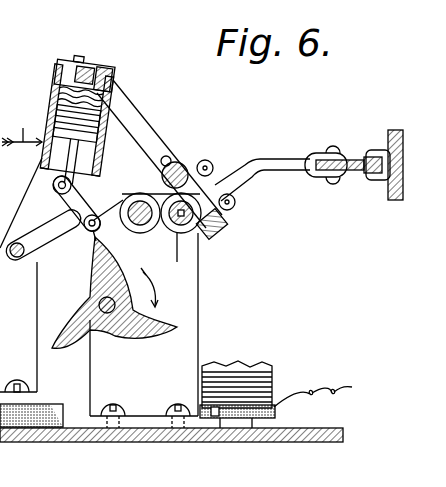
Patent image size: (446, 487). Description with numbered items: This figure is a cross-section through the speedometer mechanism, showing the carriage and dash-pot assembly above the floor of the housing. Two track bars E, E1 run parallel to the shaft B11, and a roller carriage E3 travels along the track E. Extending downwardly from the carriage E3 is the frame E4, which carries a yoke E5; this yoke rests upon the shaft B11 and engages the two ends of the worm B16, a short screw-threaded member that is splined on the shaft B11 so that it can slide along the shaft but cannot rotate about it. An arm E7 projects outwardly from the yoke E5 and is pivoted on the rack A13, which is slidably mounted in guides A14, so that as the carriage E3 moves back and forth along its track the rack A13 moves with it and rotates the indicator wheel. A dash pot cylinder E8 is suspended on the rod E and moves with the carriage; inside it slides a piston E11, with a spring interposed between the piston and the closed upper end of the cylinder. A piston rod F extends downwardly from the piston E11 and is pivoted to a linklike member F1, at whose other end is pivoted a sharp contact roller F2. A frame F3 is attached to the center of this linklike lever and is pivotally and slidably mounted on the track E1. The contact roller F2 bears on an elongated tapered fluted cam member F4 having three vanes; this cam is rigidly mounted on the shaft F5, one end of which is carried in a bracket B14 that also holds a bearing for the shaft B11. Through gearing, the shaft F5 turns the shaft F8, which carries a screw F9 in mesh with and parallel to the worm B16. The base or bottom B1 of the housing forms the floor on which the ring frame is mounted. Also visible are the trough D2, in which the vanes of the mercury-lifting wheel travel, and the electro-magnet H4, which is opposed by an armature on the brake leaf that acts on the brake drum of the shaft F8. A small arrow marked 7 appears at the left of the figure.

The direction arrow 7 is at (22, 127).
The track bar E is at (112, 84).
The track bar E1 is at (17, 258).
The roller carriage E3 is at (88, 63).
The frame E4 is at (157, 140).
The yoke E5 is at (219, 224).
The arm E7 is at (266, 158).
The dash pot cylinder E8 is at (100, 123).
The piston E11 is at (60, 117).
The piston rod F is at (70, 158).
The linklike member F1 is at (68, 208).
The contact roller F2 is at (99, 216).
The frame F3 is at (43, 230).
The cam member F4 is at (105, 325).
The shaft F5 is at (100, 301).
The shaft F8 is at (138, 205).
The screw F9 is at (124, 212).
The base B1 is at (290, 442).
The shaft B11 is at (178, 260).
The bracket B14 is at (199, 345).
The worm B16 is at (190, 183).
The rack A13 is at (366, 174).
The guides A14 is at (375, 152).
The trough D2 is at (27, 368).
The electro-magnet H4 is at (273, 375).